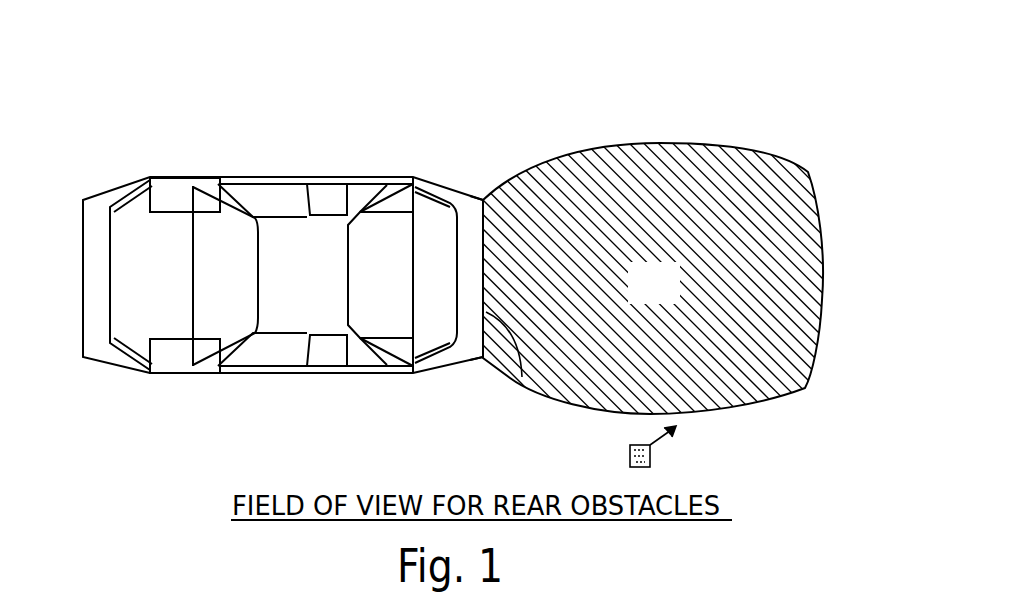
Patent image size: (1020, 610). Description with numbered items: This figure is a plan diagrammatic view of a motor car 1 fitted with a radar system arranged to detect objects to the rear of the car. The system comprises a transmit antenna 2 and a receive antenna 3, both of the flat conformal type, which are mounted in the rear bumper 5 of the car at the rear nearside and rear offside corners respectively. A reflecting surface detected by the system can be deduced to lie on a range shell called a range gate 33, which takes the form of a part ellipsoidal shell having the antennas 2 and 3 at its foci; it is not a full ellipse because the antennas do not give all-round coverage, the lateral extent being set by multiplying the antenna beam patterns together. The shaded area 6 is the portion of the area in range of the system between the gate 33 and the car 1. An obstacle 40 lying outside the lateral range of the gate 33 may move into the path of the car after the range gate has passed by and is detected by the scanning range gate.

The motor car 1 is at (312, 292).
The transmit antenna 2 is at (483, 198).
The receive antenna 3 is at (482, 362).
The rear bumper 5 is at (505, 372).
The shaded area 6 is at (665, 297).
The range gate 33 is at (823, 272).
The obstacle 40 is at (650, 457).